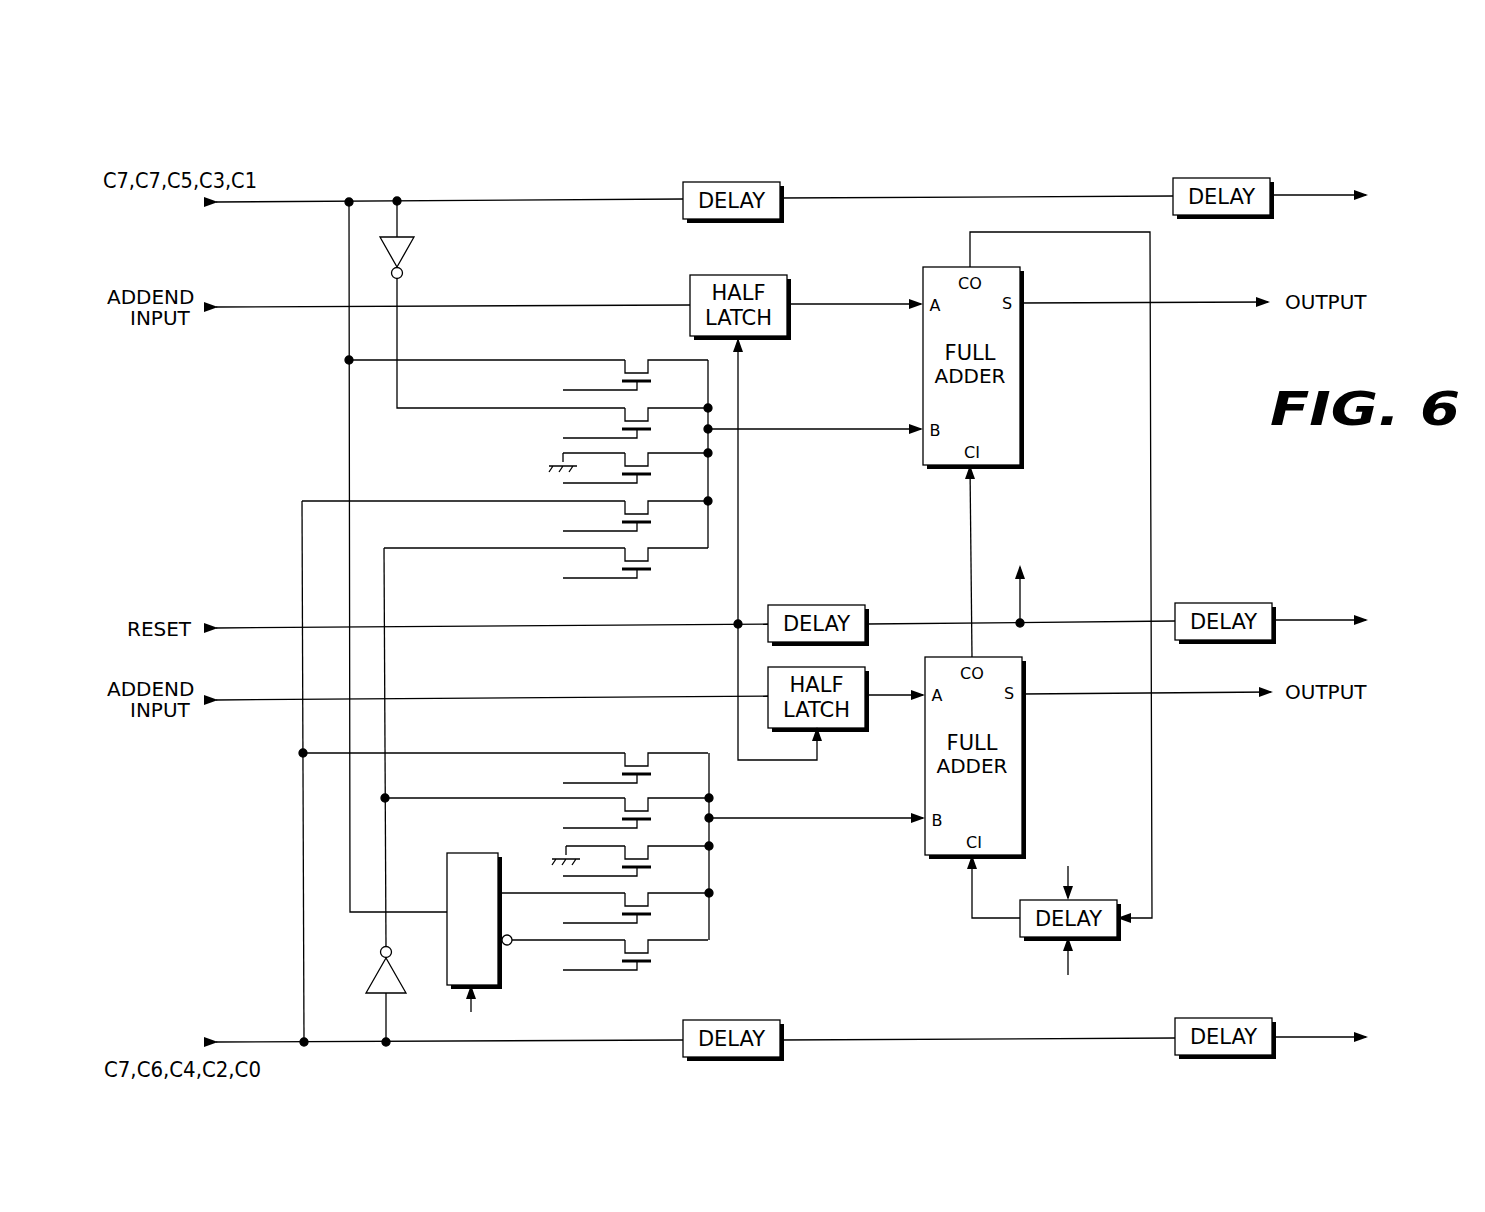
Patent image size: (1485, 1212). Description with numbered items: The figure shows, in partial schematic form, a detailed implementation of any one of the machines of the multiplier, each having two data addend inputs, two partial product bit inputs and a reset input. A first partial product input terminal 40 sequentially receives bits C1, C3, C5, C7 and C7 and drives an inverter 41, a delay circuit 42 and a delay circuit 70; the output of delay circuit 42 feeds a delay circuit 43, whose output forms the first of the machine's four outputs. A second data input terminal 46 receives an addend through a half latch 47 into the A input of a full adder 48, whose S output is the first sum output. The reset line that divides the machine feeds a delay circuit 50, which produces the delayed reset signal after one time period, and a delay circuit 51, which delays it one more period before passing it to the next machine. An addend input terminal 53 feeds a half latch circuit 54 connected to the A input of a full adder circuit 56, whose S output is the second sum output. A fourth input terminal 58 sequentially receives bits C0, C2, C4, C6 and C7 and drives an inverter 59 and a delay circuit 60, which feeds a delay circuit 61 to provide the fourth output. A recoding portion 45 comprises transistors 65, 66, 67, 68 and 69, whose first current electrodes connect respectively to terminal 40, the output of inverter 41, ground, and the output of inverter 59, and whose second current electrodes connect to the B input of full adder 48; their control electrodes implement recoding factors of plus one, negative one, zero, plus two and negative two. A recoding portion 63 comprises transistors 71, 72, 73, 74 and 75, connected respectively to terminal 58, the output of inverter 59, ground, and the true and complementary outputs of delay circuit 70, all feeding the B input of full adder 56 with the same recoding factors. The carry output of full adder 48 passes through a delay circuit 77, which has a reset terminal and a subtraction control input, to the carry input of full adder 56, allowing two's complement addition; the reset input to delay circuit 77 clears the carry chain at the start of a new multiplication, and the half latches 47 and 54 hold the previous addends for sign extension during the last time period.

The first partial product input terminal 40 is at (349, 199).
The inverter 41 is at (404, 250).
The delay circuit 42 is at (770, 182).
The delay circuit 43 is at (1262, 178).
The recoding portion 45 is at (612, 474).
The second data input terminal 46 is at (253, 305).
The half latch 47 is at (775, 275).
The full adder 48 is at (1022, 388).
The delay circuit 50 is at (852, 605).
The delay circuit 51 is at (1260, 603).
The addend input terminal 53 is at (258, 699).
The half latch circuit 54 is at (840, 729).
The full adder circuit 56 is at (1024, 772).
The fourth input terminal 58 is at (300, 1041).
The inverter 59 is at (372, 978).
The delay circuit 60 is at (770, 1020).
The delay circuit 61 is at (1262, 1018).
The recoding portion 63 is at (614, 866).
The transistor 65 is at (650, 373).
The transistor 66 is at (650, 421).
The transistor 67 is at (650, 466).
The transistor 68 is at (650, 514).
The transistor 69 is at (650, 561).
The delay circuit 70 is at (457, 853).
The transistor 71 is at (650, 766).
The transistor 72 is at (650, 811).
The transistor 73 is at (650, 859).
The transistor 74 is at (650, 906).
The transistor 75 is at (650, 953).
The delay circuit 77 is at (1100, 938).